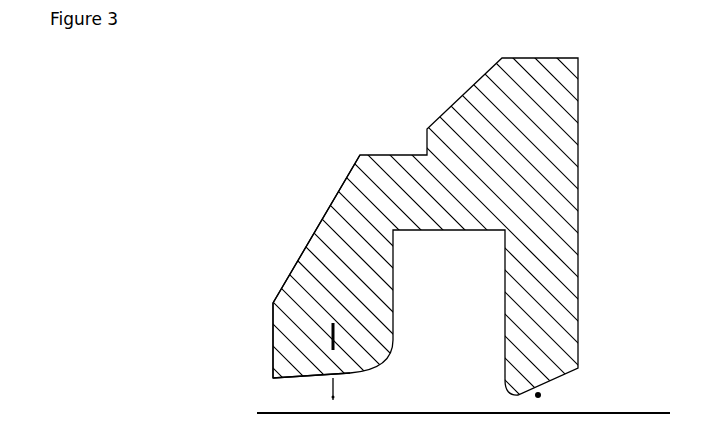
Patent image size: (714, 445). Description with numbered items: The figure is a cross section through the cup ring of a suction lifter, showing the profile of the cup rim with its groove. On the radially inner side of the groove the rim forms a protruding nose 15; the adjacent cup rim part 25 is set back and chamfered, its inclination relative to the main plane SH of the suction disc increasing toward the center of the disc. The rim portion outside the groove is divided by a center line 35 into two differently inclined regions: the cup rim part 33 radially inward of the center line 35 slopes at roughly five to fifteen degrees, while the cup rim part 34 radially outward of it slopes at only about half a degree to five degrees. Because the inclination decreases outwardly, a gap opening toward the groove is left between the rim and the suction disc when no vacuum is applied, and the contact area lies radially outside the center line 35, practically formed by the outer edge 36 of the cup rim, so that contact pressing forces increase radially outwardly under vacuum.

The nose 15 is at (532, 372).
The cup rim part 25 is at (541, 396).
The cup rim part 33 is at (348, 347).
The cup rim part 34 is at (297, 372).
The center line 35 is at (333, 397).
The outer edge 36 is at (273, 379).
The main plane SH is at (655, 404).